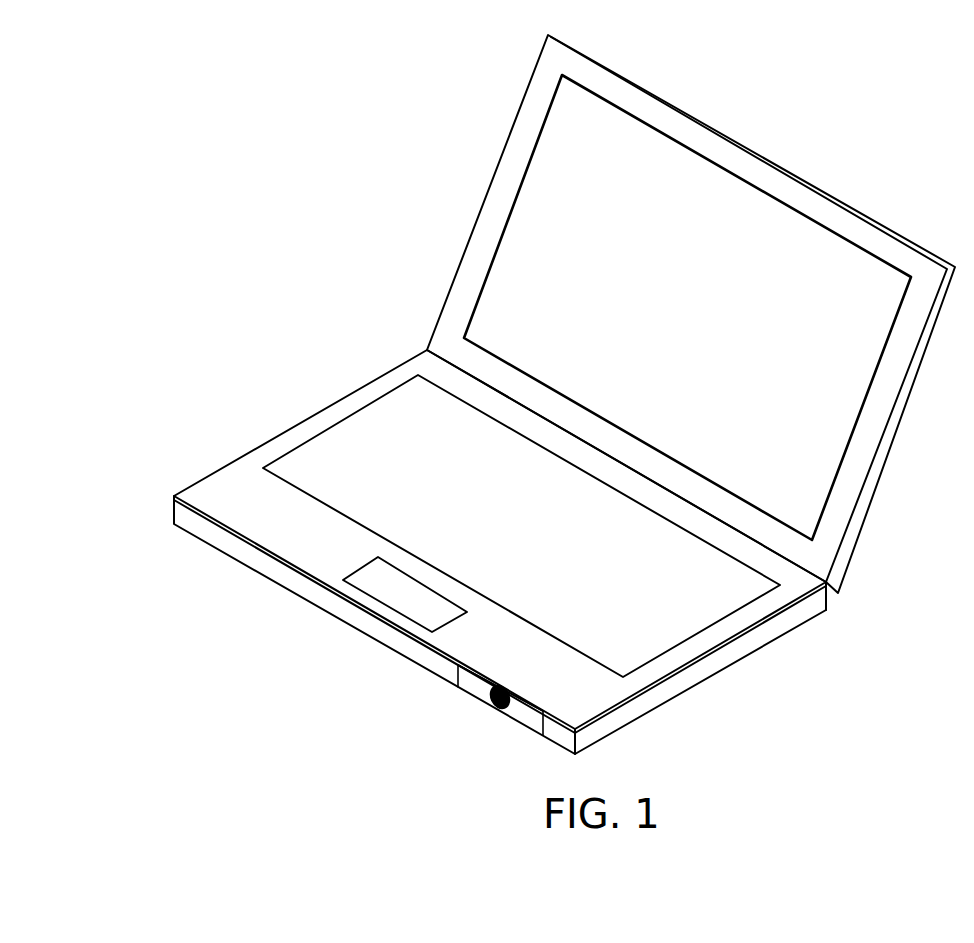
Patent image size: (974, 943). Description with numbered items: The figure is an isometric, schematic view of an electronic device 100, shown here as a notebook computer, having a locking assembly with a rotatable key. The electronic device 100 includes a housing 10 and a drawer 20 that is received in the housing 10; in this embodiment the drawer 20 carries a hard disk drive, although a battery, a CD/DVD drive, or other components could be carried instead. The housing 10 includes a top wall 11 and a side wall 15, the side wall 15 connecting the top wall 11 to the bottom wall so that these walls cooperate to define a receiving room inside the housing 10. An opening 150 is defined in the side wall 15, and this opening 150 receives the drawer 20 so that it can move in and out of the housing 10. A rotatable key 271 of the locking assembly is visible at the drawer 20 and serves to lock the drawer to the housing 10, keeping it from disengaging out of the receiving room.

The electronic device 100 is at (295, 176).
The housing 10 is at (305, 430).
The top wall 11 is at (259, 516).
The side wall 15 is at (258, 562).
The opening 150 is at (456, 668).
The drawer 20 is at (530, 717).
The rotatable key 271 is at (487, 705).